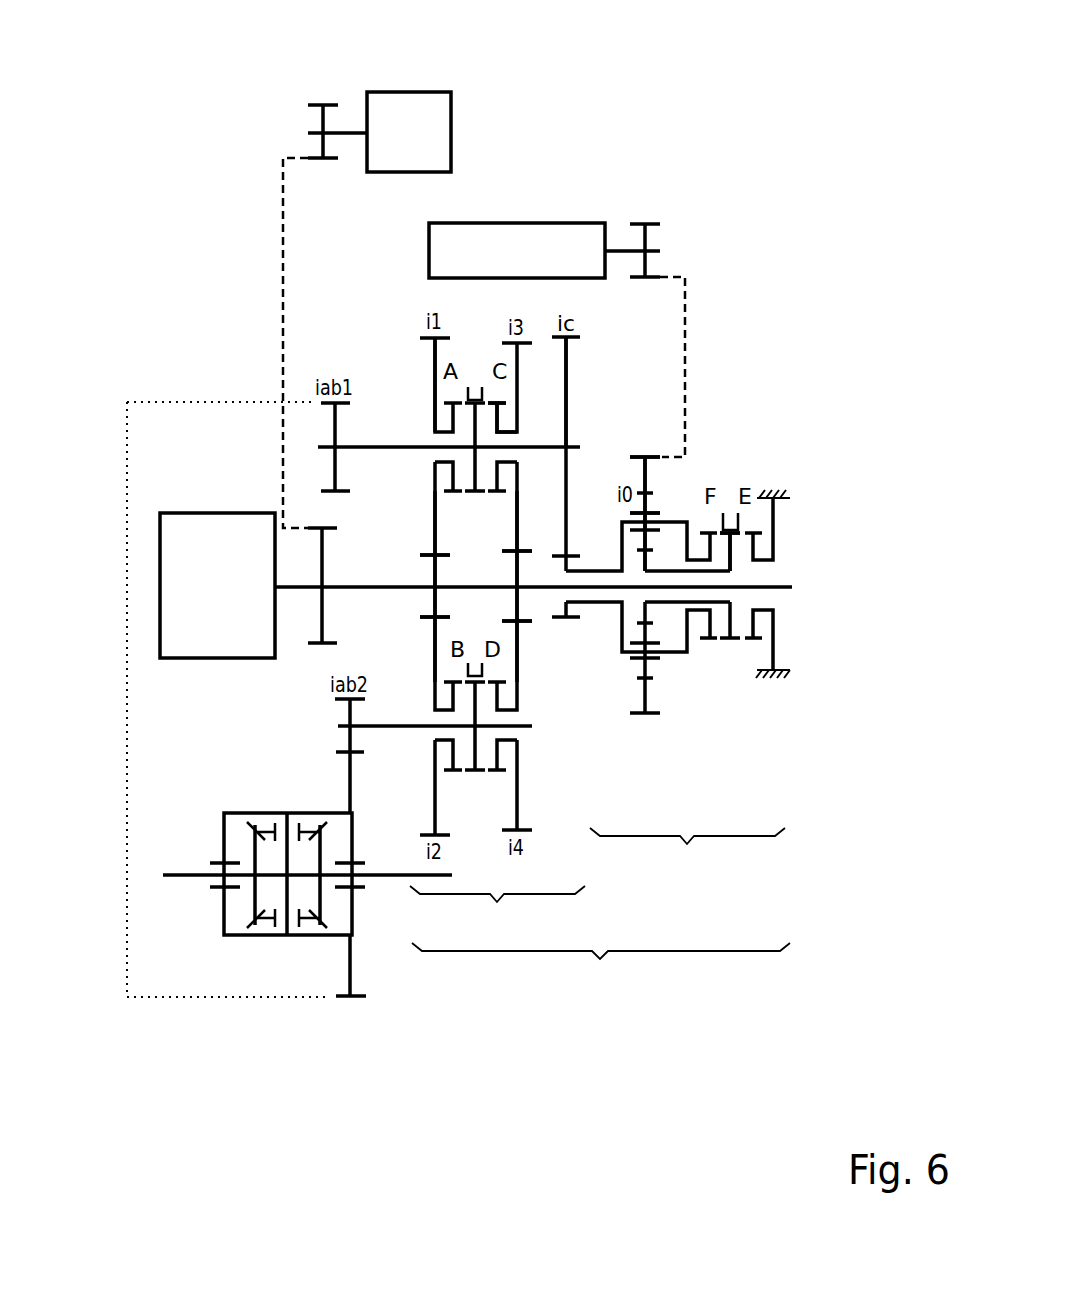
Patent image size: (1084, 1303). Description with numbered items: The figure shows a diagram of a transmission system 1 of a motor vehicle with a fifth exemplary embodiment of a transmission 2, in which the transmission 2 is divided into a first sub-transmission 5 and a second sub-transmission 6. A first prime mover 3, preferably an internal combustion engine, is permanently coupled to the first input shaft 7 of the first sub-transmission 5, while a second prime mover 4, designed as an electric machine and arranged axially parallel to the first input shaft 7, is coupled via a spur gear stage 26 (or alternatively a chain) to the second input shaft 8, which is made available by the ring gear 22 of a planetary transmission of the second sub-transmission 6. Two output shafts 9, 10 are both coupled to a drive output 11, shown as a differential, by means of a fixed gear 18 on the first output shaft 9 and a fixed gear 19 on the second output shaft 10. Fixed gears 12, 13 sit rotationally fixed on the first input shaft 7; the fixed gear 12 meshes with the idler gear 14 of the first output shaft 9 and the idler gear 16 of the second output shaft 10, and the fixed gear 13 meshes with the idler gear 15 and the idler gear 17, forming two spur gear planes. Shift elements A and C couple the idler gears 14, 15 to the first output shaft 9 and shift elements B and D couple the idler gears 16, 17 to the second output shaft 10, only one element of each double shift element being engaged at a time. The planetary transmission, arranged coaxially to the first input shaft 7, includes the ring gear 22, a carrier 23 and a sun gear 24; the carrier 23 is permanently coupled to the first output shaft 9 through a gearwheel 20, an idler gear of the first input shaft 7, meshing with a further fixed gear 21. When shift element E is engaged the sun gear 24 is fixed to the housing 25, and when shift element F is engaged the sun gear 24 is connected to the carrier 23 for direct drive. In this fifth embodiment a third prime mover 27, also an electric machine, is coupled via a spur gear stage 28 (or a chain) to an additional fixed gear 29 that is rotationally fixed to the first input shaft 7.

The transmission system 1 is at (746, 124).
The transmission 2 is at (601, 973).
The first prime mover 3 is at (203, 612).
The second prime mover 4 is at (494, 252).
The first sub-transmission 5 is at (497, 917).
The second sub-transmission 6 is at (687, 856).
The first input shaft 7 is at (290, 586).
The second input shaft 8 is at (647, 482).
The first output shaft 9 is at (412, 445).
The second output shaft 10 is at (291, 802).
The drive output 11 is at (252, 1008).
The fixed gear 12 is at (432, 568).
The fixed gear 13 is at (291, 628).
The idler gear 14 is at (432, 373).
The idler gear 15 is at (527, 400).
The idler gear 16 is at (435, 807).
The idler gear 17 is at (518, 760).
The fixed gear 18 is at (335, 470).
The fixed gear 19 is at (207, 759).
The gearwheel 20 is at (567, 605).
The further fixed gear 21 is at (567, 373).
The ring gear 22 is at (645, 514).
The carrier 23 is at (663, 518).
The sun gear 24 is at (690, 572).
The housing 25 is at (787, 493).
The spur gear stage 26 is at (685, 422).
The third prime mover 27 is at (418, 130).
The spur gear stage 28 is at (280, 388).
The additional fixed gear 29 is at (322, 557).